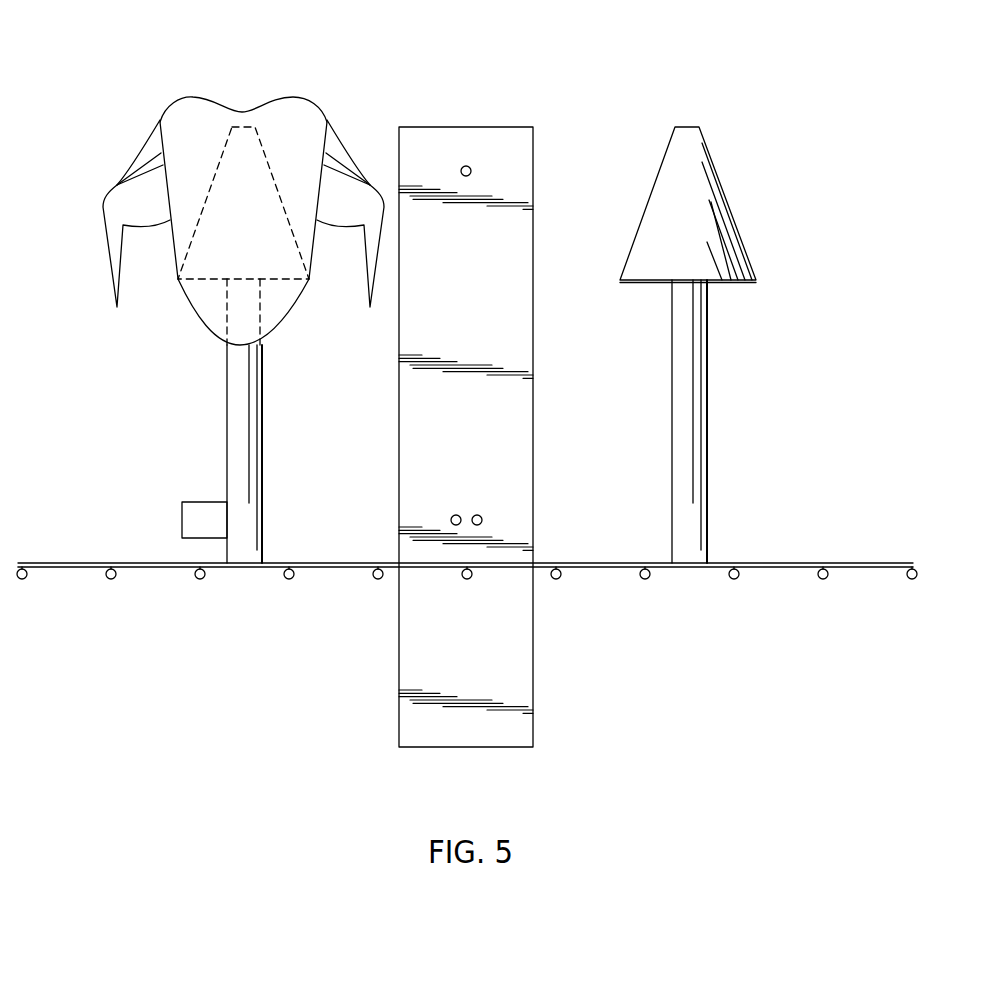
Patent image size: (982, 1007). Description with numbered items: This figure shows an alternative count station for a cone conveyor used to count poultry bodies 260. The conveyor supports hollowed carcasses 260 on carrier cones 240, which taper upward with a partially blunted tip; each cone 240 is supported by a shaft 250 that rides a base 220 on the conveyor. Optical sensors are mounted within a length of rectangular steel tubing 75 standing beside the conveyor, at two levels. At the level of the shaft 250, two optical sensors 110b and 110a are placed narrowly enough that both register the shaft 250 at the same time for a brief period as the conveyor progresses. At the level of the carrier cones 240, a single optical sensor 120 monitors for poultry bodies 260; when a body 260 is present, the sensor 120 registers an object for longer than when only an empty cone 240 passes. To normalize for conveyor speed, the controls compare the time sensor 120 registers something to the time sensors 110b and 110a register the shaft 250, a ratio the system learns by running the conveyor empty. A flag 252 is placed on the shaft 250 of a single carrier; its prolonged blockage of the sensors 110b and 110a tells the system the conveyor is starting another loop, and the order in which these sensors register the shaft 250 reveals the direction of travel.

The rectangular steel tubing 75 is at (453, 127).
The optical sensor 110a is at (482, 517).
The optical sensor 110b is at (452, 517).
The optical sensor 120 is at (472, 172).
The base 220 is at (753, 568).
The carrier cone 240 is at (218, 162).
The shaft 250 is at (228, 392).
The flag 252 is at (182, 520).
The poultry body 260 is at (193, 97).